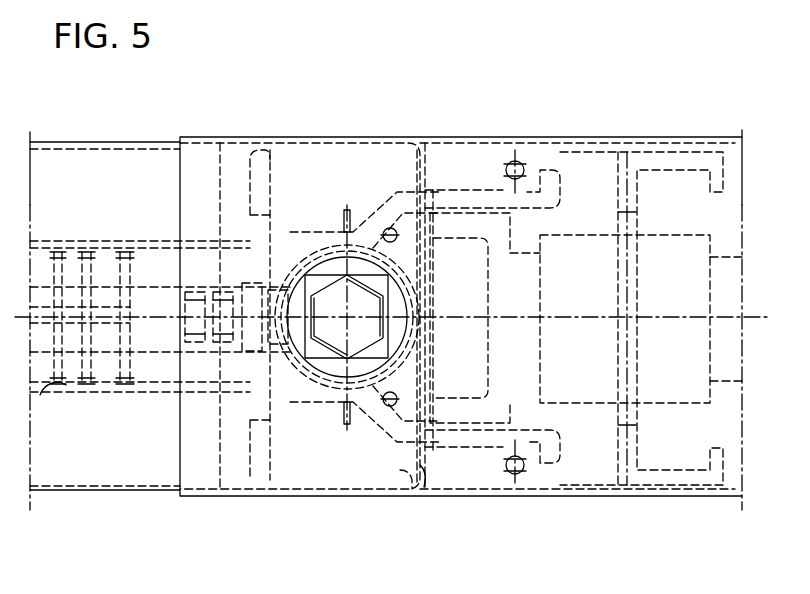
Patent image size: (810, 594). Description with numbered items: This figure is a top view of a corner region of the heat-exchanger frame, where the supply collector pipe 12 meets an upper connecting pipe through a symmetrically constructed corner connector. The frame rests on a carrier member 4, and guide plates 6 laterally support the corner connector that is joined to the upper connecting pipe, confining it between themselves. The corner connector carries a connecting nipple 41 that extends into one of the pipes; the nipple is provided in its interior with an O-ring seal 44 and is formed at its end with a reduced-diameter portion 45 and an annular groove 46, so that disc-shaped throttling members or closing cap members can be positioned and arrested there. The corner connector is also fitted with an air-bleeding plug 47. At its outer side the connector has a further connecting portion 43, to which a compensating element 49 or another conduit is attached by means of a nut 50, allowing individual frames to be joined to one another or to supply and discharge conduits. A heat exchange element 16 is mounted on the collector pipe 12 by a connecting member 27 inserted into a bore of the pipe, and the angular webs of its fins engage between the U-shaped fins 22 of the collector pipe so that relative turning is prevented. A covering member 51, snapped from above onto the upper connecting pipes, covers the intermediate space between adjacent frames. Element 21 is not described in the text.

The carrier member 4 is at (673, 150).
The guide plate 6 is at (455, 183).
The supply collector pipe 12 is at (426, 172).
The heat exchange element 16 is at (157, 500).
The housing corner 21 is at (422, 470).
The U-shaped fin 22 is at (273, 460).
The connecting member 27 is at (245, 357).
The connecting nipple 41 is at (100, 247).
The connecting portion 43 is at (458, 236).
The O-ring seal 44 is at (125, 242).
The reduced-diameter portion 45 is at (40, 395).
The annular groove 46 is at (66, 388).
The air-bleeding plug 47 is at (337, 342).
The compensating element 49 is at (588, 404).
The nut 50 is at (472, 412).
The covering member 51 is at (290, 137).